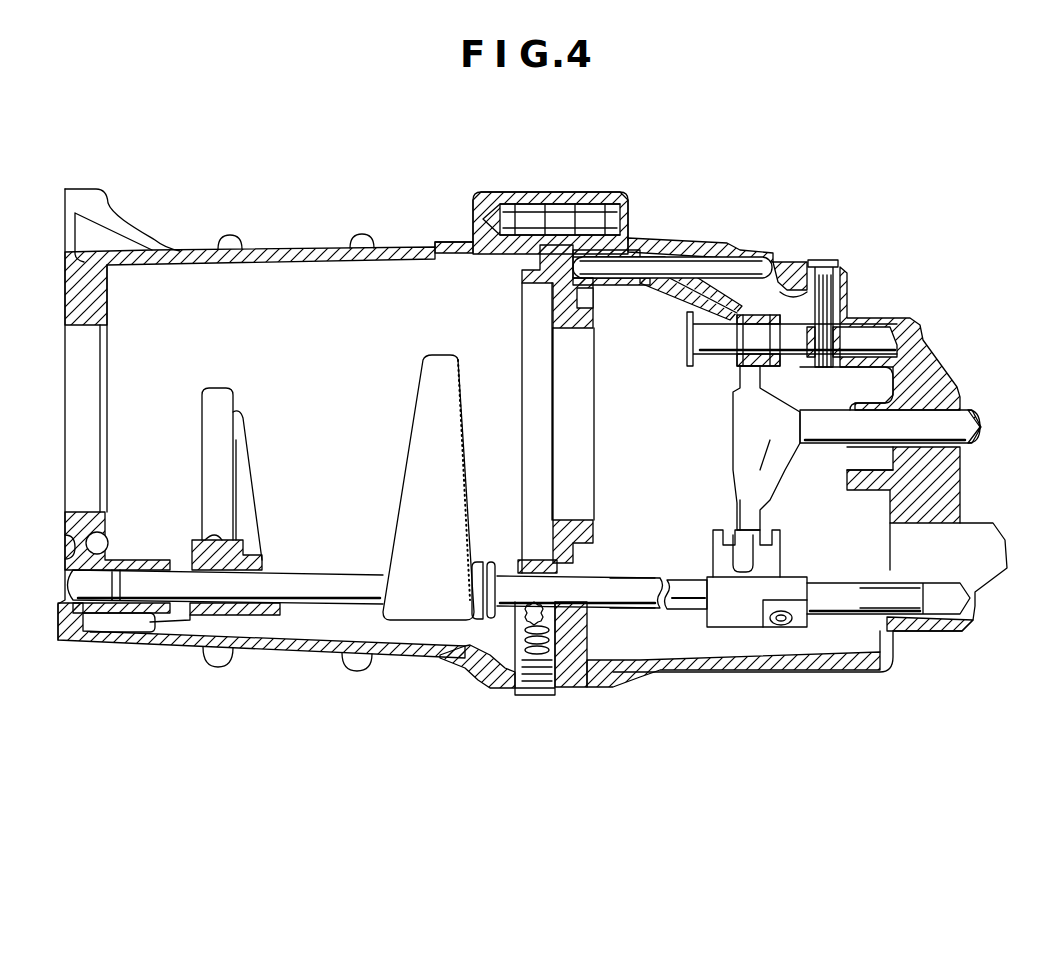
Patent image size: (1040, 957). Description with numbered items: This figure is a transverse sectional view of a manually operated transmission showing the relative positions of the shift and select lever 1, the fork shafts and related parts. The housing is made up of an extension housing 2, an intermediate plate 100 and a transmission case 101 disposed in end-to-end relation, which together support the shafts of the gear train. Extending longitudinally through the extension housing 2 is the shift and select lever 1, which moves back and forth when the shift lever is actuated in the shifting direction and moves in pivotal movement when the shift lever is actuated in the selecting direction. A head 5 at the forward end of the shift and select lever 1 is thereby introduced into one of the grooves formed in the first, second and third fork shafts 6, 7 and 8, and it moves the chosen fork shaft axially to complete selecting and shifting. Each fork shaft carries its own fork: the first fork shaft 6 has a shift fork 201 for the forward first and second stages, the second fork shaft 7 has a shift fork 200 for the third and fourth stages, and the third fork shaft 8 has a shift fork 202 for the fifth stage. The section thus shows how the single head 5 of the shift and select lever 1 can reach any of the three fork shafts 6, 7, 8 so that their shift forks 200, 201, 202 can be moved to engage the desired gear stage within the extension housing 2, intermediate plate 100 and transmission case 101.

The shift and select lever 1 is at (970, 445).
The extension housing 2 is at (406, 652).
The head 5 is at (736, 472).
The first fork shaft 6 is at (624, 600).
The second fork shaft 7 is at (328, 575).
The third fork shaft 8 is at (680, 602).
The intermediate plate 100 is at (562, 200).
The transmission case 101 is at (303, 240).
The shift fork for third and fourth stages 200 is at (283, 606).
The shift fork for forward first and second stages 201 is at (412, 428).
The shift fork for fifth stage 202 is at (788, 480).